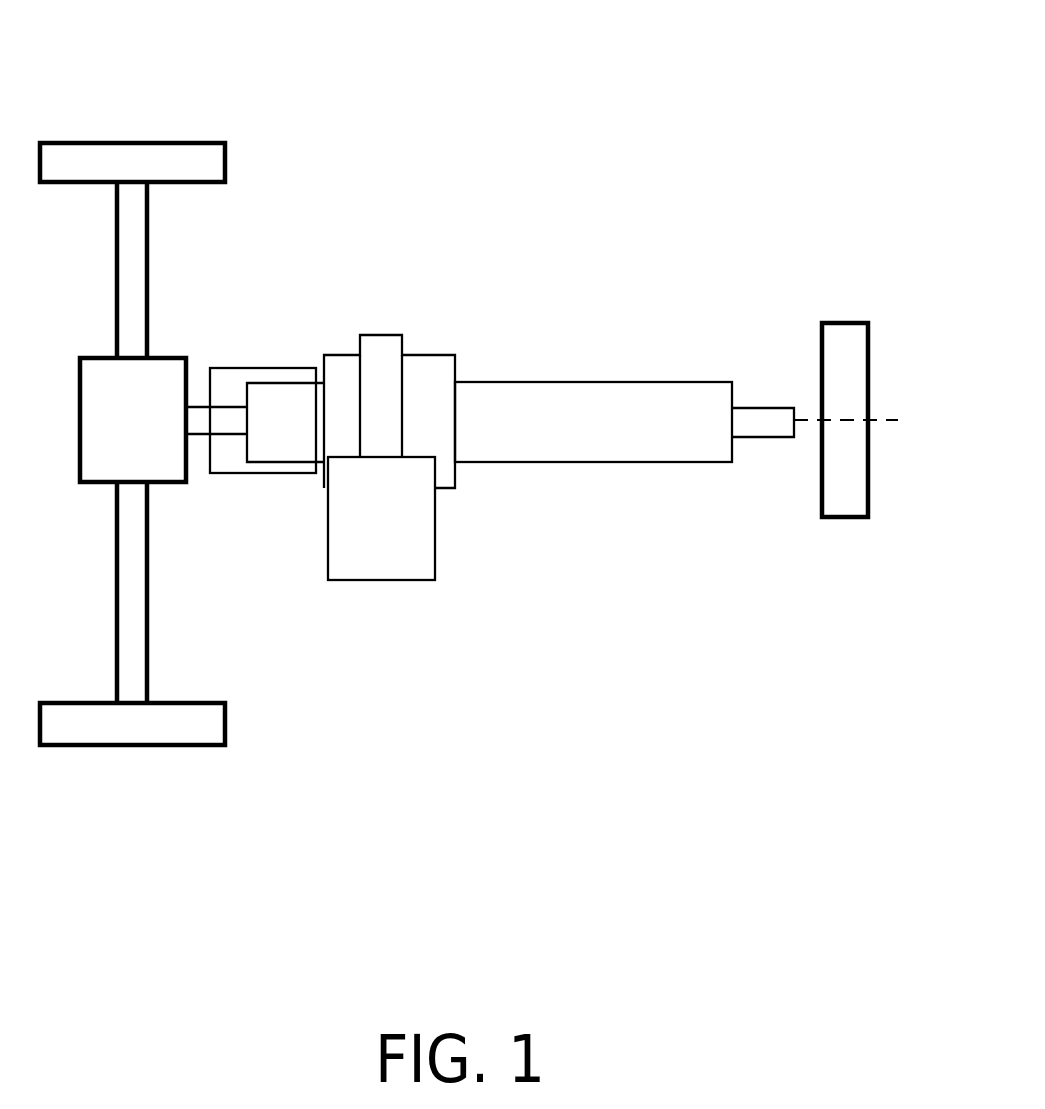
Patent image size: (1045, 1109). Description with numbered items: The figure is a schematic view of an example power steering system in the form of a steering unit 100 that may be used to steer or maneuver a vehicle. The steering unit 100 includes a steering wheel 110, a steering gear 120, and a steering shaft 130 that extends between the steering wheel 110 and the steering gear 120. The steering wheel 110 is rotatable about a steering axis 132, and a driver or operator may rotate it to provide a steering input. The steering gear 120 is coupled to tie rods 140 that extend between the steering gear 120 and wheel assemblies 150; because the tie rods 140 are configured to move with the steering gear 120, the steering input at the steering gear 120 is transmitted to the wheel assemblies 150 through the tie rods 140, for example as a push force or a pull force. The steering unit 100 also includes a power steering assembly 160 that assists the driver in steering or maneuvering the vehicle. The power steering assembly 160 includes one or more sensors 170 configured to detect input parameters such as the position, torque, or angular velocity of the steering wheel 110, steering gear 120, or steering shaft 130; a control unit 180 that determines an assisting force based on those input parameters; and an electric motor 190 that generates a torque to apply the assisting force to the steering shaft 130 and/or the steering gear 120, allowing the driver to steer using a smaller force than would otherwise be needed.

The steering unit 100 is at (303, 883).
The steering wheel 110 is at (842, 323).
The steering gear 120 is at (165, 358).
The steering shaft 130 is at (690, 380).
The steering axis 132 is at (867, 422).
The tie rods 140 is at (117, 292).
The wheel assemblies 150 is at (194, 142).
The power steering assembly 160 is at (453, 594).
The sensors 170 is at (435, 353).
The control unit 180 is at (240, 478).
The electric motor 190 is at (437, 518).